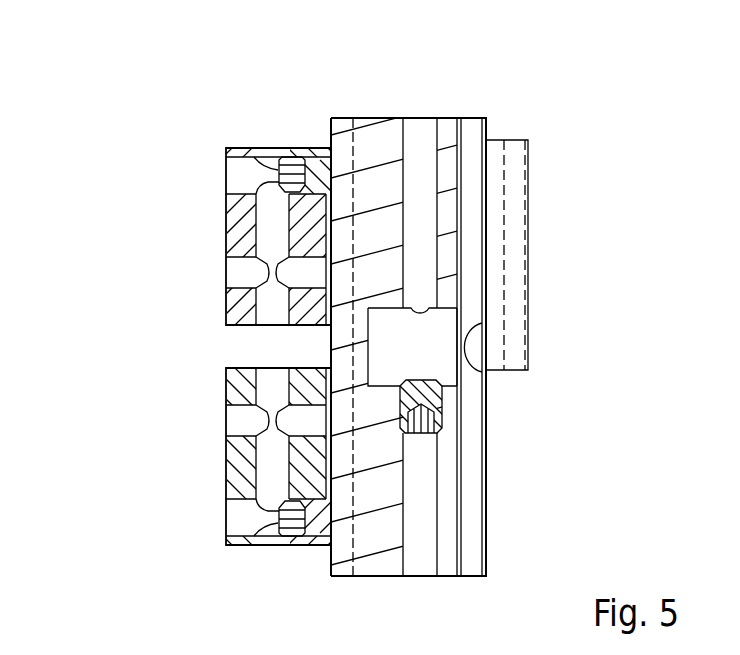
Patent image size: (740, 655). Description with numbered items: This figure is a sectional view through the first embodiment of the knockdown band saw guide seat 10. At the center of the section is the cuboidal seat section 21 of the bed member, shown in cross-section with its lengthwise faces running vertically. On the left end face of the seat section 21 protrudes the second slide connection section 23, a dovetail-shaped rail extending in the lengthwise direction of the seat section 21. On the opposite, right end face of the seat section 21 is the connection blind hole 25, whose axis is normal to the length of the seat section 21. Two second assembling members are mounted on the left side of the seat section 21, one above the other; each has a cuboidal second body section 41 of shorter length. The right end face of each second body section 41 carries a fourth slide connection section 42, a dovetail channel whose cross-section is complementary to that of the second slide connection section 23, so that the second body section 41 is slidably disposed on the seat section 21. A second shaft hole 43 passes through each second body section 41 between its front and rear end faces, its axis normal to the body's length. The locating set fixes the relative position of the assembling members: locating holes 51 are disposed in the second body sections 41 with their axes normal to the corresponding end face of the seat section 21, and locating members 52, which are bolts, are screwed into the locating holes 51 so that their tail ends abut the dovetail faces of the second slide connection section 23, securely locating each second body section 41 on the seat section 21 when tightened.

The knockdown band saw guide seat 10 is at (47, 584).
The seat section 21 is at (448, 117).
The second slide connection section 23 is at (334, 117).
The connection blind hole 25 is at (443, 335).
The second body section 41 is at (225, 222).
The fourth slide connection section 42 is at (318, 222).
The second shaft hole 43 is at (233, 277).
The locating holes 51 is at (312, 148).
The locating members 52 is at (308, 150).